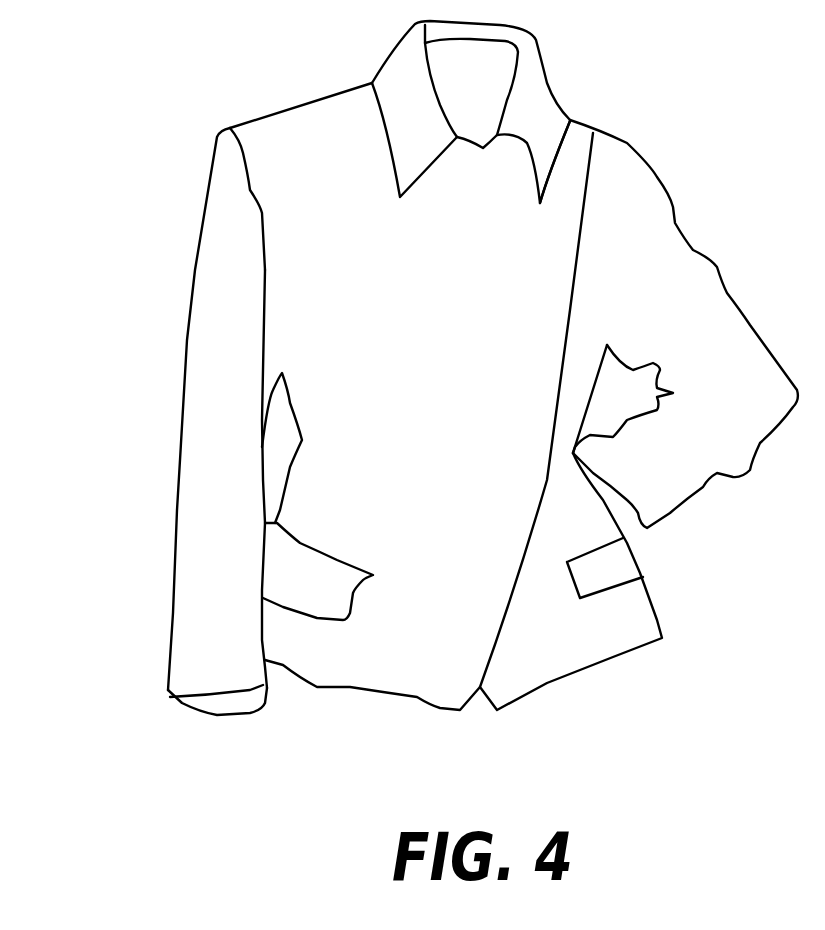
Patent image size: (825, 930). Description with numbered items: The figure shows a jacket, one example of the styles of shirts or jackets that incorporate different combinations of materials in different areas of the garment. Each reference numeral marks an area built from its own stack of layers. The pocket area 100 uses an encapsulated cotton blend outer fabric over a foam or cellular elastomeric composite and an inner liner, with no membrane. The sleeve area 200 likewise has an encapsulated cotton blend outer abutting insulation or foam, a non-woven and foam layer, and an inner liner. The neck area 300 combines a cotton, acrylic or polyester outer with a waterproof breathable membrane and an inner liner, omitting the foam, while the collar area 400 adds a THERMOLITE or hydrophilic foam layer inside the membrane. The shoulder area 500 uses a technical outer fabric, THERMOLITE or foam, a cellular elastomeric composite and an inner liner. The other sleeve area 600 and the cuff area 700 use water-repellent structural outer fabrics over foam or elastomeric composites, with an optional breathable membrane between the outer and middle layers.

The apparel area 100 is at (625, 570).
The apparel area 200 is at (663, 280).
The apparel area 300 is at (542, 140).
The apparel area 400 is at (500, 77).
The apparel area 500 is at (292, 133).
The apparel area 600 is at (230, 352).
The apparel area 700 is at (247, 705).